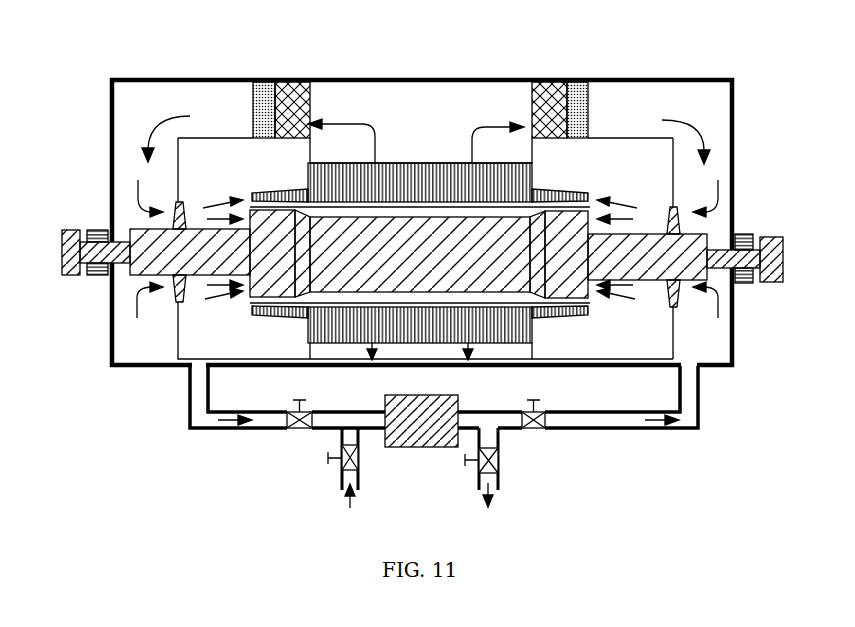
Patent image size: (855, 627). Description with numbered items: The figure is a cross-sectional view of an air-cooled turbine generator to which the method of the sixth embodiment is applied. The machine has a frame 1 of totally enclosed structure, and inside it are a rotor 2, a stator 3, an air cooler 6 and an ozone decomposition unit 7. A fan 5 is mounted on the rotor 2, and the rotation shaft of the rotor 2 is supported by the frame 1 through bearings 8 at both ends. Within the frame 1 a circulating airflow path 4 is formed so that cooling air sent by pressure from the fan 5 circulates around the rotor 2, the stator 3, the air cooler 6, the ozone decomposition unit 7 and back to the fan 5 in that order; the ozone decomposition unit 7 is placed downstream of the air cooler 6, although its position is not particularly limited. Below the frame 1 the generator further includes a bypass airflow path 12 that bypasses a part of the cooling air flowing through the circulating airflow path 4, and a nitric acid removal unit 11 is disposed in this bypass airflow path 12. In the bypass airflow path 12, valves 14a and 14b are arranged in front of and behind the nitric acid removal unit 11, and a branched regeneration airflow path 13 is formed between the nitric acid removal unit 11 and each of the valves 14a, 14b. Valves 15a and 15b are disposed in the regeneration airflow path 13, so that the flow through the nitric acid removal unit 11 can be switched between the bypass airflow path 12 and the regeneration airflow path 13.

The frame 1 is at (640, 80).
The rotor 2 is at (716, 236).
The stator 3 is at (433, 163).
The circulating airflow path 4 is at (137, 100).
The fan 5 is at (172, 221).
The air cooler 6 is at (298, 80).
The ozone decomposition unit 7 is at (260, 80).
The bearings 8 is at (98, 278).
The nitric acid removal unit 11 is at (420, 432).
The bypass airflow path 12 is at (198, 404).
The regeneration airflow path 13 is at (362, 486).
The valve 14a is at (293, 432).
The valve 14b is at (538, 432).
The valve 15a is at (345, 472).
The valve 15b is at (497, 474).